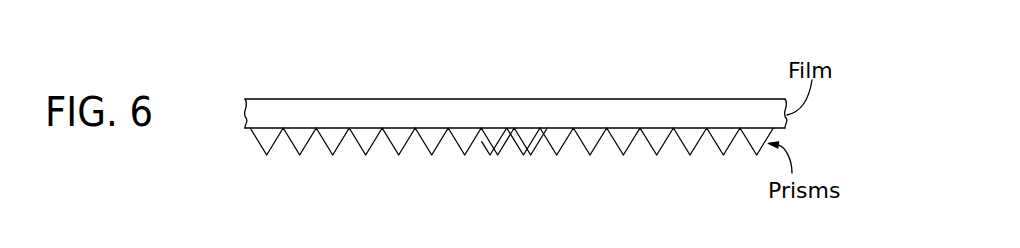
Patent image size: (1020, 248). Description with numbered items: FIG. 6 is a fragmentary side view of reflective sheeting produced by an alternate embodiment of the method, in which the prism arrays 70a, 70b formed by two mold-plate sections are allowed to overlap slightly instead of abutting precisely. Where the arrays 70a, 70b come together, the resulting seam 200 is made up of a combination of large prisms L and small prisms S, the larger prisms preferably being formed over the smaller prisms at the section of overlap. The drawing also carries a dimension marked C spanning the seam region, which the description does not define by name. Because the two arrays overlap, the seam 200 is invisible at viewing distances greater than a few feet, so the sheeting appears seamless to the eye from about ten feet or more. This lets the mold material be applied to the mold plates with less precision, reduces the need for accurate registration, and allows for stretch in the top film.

The prism array 70a is at (298, 138).
The prism array 70b is at (648, 142).
The seam 200 is at (516, 163).
The small prisms S is at (504, 130).
The large prisms L is at (535, 147).
The overlap width C is at (450, 73).